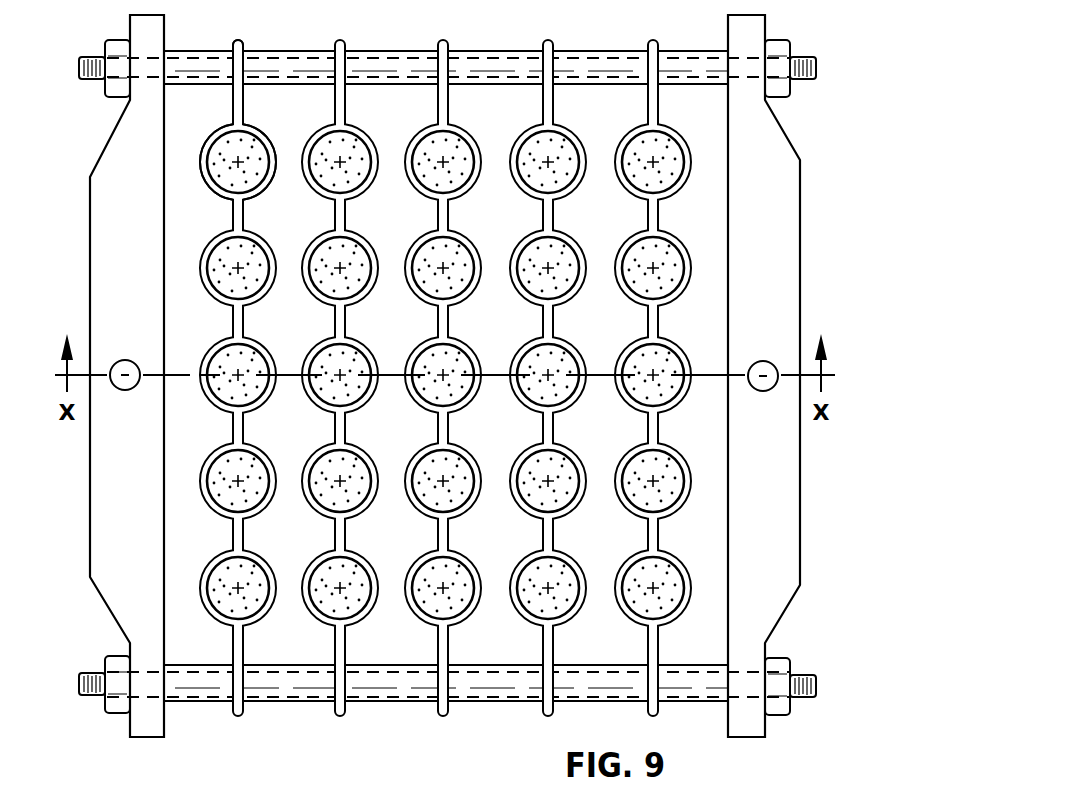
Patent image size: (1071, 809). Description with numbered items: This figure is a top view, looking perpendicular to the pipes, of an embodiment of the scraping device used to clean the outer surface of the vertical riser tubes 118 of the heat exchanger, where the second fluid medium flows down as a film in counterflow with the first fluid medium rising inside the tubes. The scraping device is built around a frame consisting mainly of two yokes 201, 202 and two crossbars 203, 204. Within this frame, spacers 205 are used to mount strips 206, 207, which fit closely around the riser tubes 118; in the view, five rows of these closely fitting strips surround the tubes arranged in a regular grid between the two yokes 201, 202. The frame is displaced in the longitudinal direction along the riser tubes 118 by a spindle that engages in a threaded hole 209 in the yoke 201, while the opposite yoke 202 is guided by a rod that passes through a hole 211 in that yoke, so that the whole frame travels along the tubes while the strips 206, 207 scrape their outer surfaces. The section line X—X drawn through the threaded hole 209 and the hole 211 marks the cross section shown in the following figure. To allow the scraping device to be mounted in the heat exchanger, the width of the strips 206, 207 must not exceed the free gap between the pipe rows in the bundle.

The riser tube 118 is at (323, 253).
The yoke 201 is at (143, 238).
The yoke 202 is at (784, 230).
The crossbar 203 is at (794, 660).
The crossbar 204 is at (808, 84).
The spacer 205 is at (278, 55).
The strip 206 is at (223, 128).
The strip 207 is at (245, 125).
The threaded hole 209 is at (123, 390).
The hole 211 is at (768, 391).